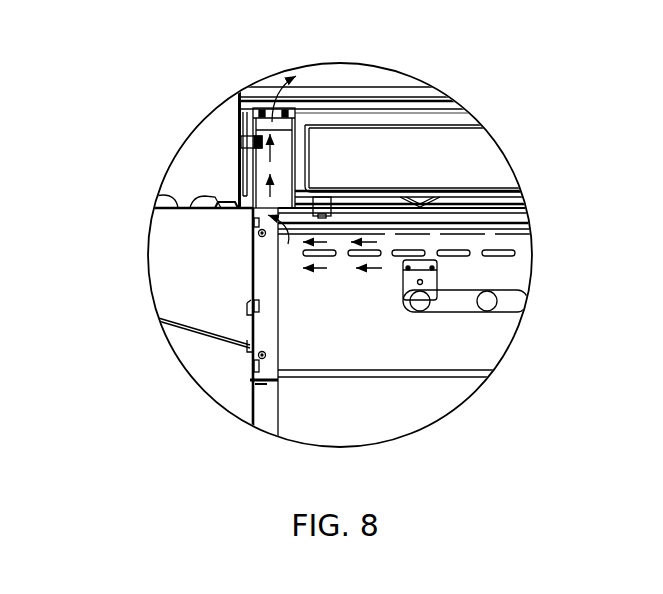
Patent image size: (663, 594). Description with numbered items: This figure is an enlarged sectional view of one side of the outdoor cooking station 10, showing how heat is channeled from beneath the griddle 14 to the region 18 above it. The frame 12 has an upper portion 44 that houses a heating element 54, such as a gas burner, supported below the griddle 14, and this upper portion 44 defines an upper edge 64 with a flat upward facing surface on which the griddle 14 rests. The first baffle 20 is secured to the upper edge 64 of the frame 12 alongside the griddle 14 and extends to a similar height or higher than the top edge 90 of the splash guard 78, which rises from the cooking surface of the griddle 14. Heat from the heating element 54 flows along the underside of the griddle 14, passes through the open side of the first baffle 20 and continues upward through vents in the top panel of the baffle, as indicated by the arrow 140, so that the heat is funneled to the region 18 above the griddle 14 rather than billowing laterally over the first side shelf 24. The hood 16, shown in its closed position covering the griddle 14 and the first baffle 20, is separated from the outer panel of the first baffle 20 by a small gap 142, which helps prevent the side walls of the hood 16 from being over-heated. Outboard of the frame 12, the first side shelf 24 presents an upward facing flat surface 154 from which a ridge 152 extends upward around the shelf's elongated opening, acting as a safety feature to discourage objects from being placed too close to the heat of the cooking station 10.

The outdoor cooking station 10 is at (96, 94).
The frame 12 is at (250, 400).
The griddle 14 is at (484, 182).
The hood 16 is at (232, 119).
The region above the griddle 18 is at (355, 70).
The first baffle 20 is at (253, 152).
The first side shelf 24 is at (156, 327).
The upper portion of the frame 44 is at (194, 341).
The heating element 54 is at (456, 316).
The upper edge 64 is at (513, 213).
The splash guard 78 is at (473, 140).
The top edge of the splash guard 90 is at (462, 128).
The arrow 140 is at (276, 68).
The small gap 142 is at (240, 192).
The ridge 152 is at (225, 195).
The upward facing flat surface 154 is at (160, 196).